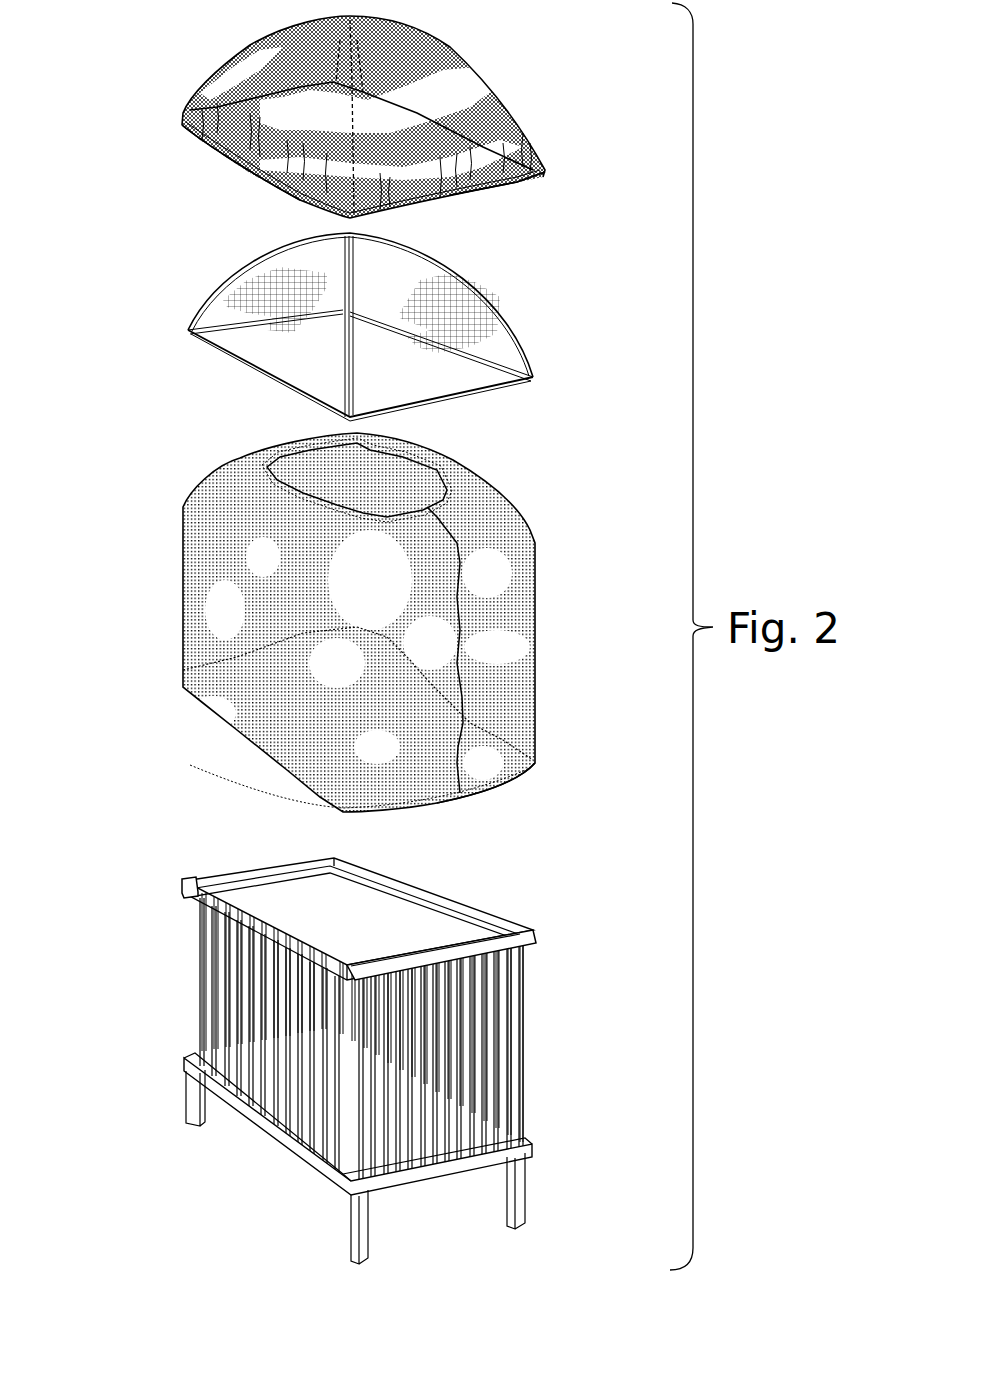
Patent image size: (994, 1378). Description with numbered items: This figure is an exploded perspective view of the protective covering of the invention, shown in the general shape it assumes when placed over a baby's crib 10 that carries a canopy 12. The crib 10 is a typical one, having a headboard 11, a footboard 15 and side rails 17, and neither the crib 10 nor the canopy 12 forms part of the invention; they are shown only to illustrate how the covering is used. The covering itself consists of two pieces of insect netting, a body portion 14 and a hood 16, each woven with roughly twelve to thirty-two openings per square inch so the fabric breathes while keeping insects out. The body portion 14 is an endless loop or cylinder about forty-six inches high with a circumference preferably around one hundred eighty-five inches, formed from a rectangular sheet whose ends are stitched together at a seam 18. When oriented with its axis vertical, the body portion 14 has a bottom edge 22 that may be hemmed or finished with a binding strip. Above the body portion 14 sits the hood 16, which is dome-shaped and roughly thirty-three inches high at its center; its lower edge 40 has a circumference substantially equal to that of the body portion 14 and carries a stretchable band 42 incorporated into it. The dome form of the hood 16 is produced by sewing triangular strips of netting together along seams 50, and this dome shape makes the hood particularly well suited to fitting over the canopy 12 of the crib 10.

The crib 10 is at (399, 1036).
The headboard 11 is at (297, 866).
The canopy 12 is at (160, 310).
The body portion 14 is at (590, 596).
The footboard 15 is at (535, 932).
The hood 16 is at (440, 43).
The side rails 17 is at (205, 902).
The seam 18 is at (460, 678).
The bottom edge 22 is at (532, 787).
The lower edge 40 is at (227, 153).
The stretchable band 42 is at (547, 173).
The seams 50 is at (340, 40).